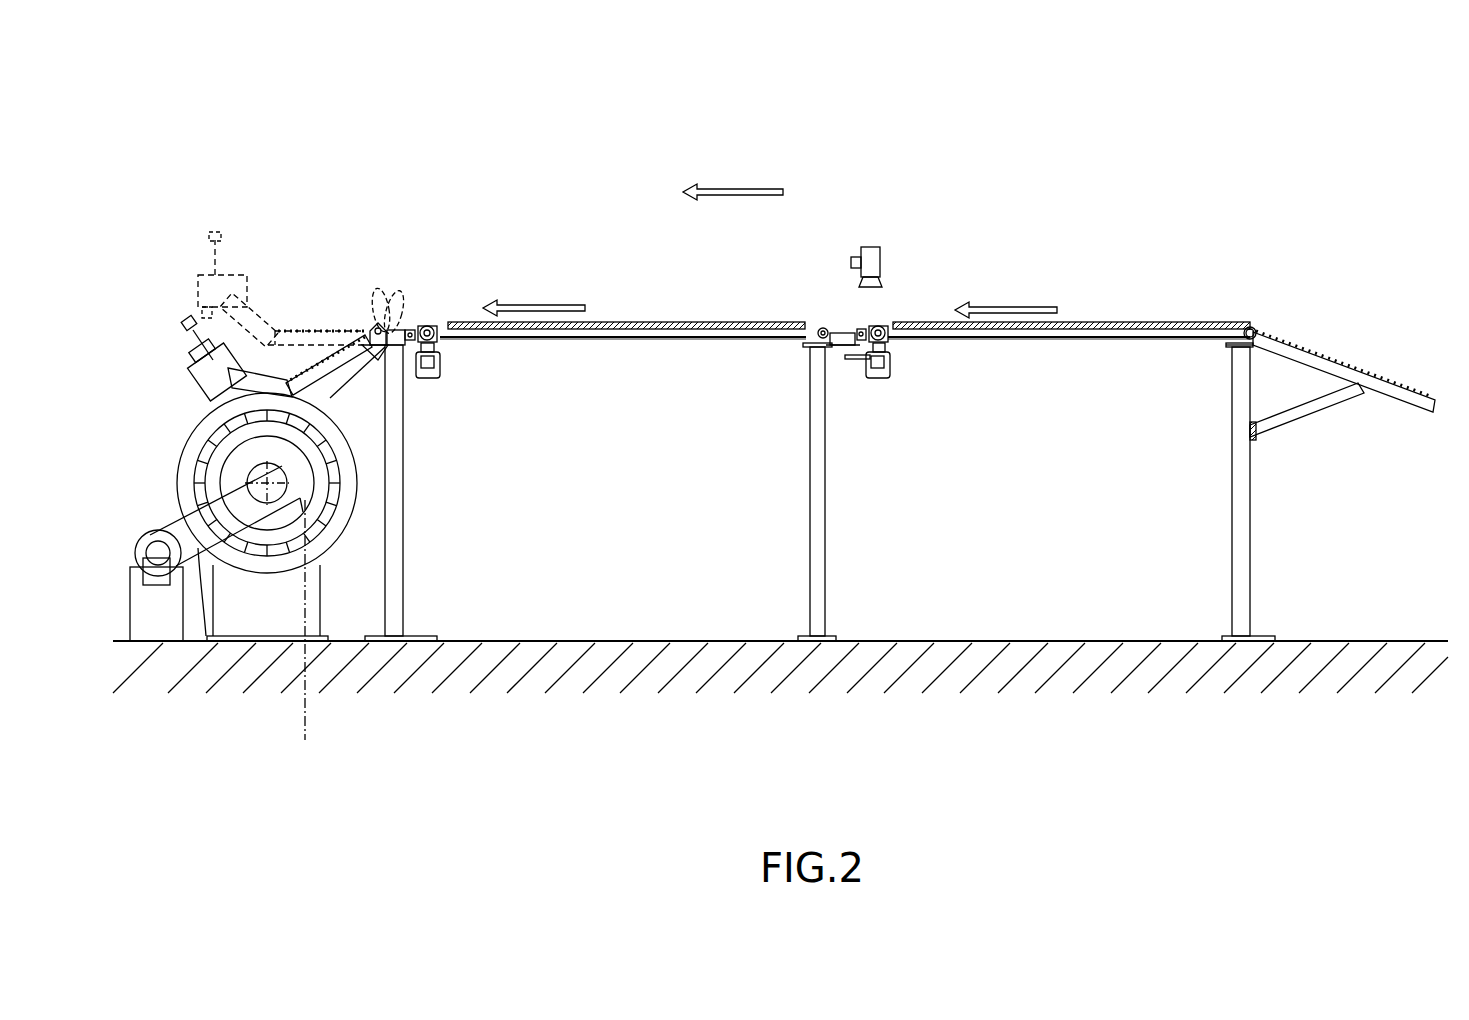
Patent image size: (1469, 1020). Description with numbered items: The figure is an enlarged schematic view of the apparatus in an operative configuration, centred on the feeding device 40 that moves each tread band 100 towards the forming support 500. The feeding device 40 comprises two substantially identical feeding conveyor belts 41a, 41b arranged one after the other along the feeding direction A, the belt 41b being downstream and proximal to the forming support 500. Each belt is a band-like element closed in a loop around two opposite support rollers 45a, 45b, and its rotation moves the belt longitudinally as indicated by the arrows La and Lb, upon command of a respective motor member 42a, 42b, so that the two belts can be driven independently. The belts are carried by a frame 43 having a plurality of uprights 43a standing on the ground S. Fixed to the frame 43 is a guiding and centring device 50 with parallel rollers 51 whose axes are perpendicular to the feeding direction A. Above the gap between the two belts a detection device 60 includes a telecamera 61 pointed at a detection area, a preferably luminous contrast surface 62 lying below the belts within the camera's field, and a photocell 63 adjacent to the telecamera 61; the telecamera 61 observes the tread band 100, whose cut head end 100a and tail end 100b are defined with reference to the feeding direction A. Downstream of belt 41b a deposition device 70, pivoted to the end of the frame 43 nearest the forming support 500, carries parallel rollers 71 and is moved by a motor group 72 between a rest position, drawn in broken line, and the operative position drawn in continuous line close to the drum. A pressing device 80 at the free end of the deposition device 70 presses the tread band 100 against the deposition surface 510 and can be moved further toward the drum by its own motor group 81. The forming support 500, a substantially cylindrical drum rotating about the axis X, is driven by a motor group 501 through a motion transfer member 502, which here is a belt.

The feeding device 40 is at (1135, 105).
The feeding conveyor belt 41a is at (1112, 347).
The feeding conveyor belt 41b is at (592, 347).
The motor member 42a is at (892, 372).
The motor member 42b is at (436, 368).
The frame 43 is at (1262, 522).
The upright 43a is at (400, 560).
The support roller 45a is at (886, 345).
The support roller 45b is at (427, 325).
The guiding and centring device 50 is at (1377, 298).
The roller 51 is at (1408, 368).
The detection device 60 is at (845, 222).
The telecamera 61 is at (872, 256).
The contrast surface 62 is at (848, 360).
The photocell 63 is at (851, 262).
The deposition device 70 is at (298, 280).
The roller 71 is at (331, 322).
The motor group 72 is at (256, 325).
The pressing device 80 is at (186, 289).
The motor group 81 is at (193, 268).
The tread band 100 is at (623, 322).
The head end 100a is at (460, 308).
The tail end 100b is at (768, 319).
The forming support 500 is at (176, 434).
The motor group 501 is at (158, 605).
The motion transfer member 502 is at (208, 642).
The deposition surface 510 is at (180, 490).
The feeding direction A is at (730, 189).
The longitudinal direction of belt 41a La is at (1005, 307).
The longitudinal direction of belt 41b Lb is at (535, 305).
The ground S is at (1345, 636).
The rotation axis X is at (307, 635).